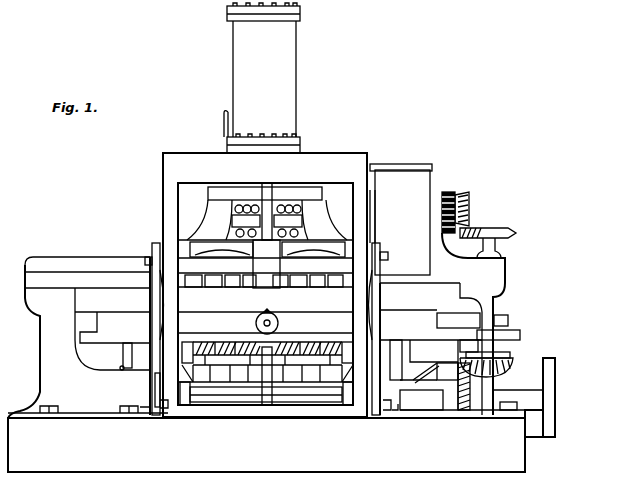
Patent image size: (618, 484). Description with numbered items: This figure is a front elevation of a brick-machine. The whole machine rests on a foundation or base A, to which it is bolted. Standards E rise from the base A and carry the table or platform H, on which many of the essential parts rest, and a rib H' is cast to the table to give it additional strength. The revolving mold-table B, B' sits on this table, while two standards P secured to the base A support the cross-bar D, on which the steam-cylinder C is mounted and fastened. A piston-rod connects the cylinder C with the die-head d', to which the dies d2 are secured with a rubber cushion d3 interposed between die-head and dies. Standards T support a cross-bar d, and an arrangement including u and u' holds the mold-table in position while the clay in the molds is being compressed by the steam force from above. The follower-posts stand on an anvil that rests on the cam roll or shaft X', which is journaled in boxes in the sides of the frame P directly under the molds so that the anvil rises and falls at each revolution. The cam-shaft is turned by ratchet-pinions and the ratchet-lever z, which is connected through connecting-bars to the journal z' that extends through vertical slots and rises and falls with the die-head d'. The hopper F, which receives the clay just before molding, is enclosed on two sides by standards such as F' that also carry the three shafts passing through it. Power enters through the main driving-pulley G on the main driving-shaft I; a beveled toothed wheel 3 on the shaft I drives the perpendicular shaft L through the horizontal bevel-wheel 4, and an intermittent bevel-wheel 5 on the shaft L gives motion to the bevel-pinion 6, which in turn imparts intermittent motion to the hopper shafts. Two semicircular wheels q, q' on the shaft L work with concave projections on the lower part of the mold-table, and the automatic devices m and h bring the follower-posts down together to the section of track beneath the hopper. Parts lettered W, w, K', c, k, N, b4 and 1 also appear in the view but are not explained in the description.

The foundation or base A is at (266, 445).
The revolving mold-table B is at (281, 327).
The revolving mold-table B' is at (256, 302).
The steam-cylinder C is at (262, 78).
The cross-bar D is at (265, 285).
The standard E is at (256, 325).
The hopper F is at (401, 219).
The standard F' is at (377, 216).
The main driving-pulley G is at (547, 397).
The table or platform H is at (253, 290).
The rib H' is at (87, 264).
The standard P is at (266, 329).
The standard T is at (267, 220).
The weight W is at (267, 221).
The spring w is at (263, 240).
The mold-table holding arrangement u is at (265, 273).
The mold-table holding arrangement u' is at (265, 321).
The plate K' is at (265, 267).
The cross-bar d is at (265, 193).
The die-head d' is at (266, 235).
The die d2 is at (264, 281).
The rubber cushion d3 is at (263, 268).
The cam roll or shaft X' is at (282, 402).
The ratchet-lever z is at (151, 390).
The journal z' is at (266, 278).
The rod c is at (265, 360).
The pin k is at (274, 373).
The automatic device h is at (425, 383).
The gear wheel N is at (448, 208).
The bevel-pinion 6 is at (466, 209).
The intermittent bevel-wheel 5 is at (488, 237).
The beveled toothed wheel 3 is at (466, 312).
The horizontal bevel-wheel 4 is at (489, 364).
The foot 1 is at (471, 400).
The semicircular wheel q is at (505, 320).
The semicircular wheel q' is at (503, 335).
The perpendicular shaft L is at (490, 363).
The box b4 is at (434, 375).
The automatic device m is at (447, 371).
The main driving-shaft I is at (421, 395).